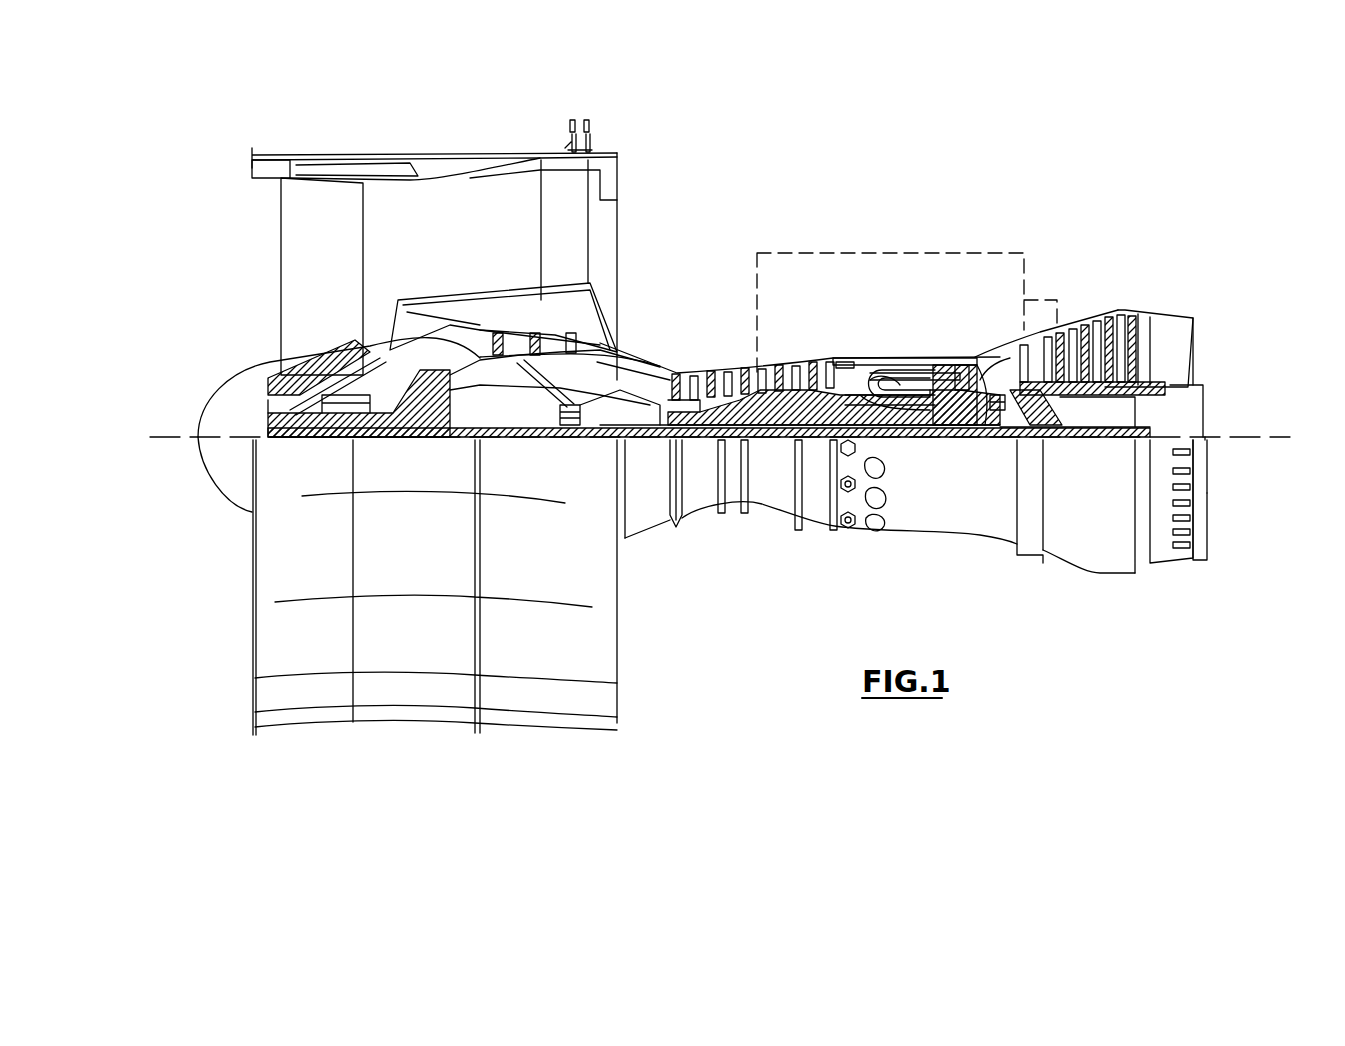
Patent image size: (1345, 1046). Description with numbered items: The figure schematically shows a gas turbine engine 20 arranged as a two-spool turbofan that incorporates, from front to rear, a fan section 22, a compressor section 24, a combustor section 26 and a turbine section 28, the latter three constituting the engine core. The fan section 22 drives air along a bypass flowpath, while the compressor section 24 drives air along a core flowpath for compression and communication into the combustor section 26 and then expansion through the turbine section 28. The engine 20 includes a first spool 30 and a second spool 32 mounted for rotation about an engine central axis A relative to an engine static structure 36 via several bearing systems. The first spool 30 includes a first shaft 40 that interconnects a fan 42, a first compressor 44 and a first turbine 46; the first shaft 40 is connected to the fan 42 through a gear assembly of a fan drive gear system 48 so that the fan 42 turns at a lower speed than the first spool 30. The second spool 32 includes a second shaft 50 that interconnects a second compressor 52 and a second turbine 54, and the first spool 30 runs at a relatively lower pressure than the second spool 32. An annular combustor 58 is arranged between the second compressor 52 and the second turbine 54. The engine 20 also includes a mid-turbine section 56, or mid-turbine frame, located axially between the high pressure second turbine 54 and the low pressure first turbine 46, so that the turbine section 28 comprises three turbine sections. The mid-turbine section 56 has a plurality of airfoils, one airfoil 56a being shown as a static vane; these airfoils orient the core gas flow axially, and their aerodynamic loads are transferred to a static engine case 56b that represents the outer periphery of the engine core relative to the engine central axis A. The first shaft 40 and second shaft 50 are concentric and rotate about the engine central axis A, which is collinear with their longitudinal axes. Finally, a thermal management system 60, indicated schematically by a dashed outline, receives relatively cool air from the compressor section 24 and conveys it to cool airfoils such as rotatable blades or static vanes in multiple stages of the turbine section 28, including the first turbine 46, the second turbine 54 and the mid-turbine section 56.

The gas turbine engine 20 is at (898, 203).
The fan section 22 is at (360, 141).
The compressor section 24 is at (670, 340).
The combustor section 26 is at (890, 328).
The turbine section 28 is at (1074, 291).
The first spool 30 is at (775, 445).
The second spool 32 is at (818, 370).
The engine static structure 36 is at (813, 536).
The first shaft 40 is at (634, 442).
The fan 42 is at (338, 280).
The first compressor 44 is at (553, 338).
The first turbine 46 is at (1080, 322).
The fan drive gear system 48 is at (438, 420).
The second shaft 50 is at (900, 438).
The second compressor 52 is at (748, 384).
The second turbine 54 is at (960, 378).
The mid-turbine section 56 is at (996, 338).
The airfoil 56a is at (1025, 326).
The static engine case 56b is at (975, 354).
The annular combustor 58 is at (876, 365).
The thermal management system 60 is at (837, 249).
The engine central axis A is at (1270, 437).